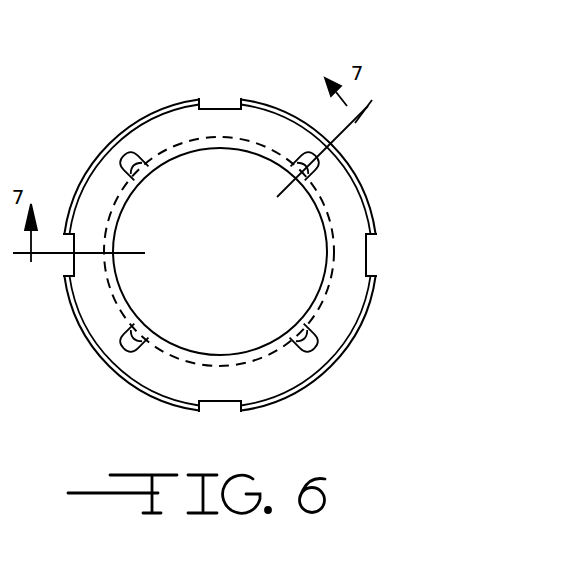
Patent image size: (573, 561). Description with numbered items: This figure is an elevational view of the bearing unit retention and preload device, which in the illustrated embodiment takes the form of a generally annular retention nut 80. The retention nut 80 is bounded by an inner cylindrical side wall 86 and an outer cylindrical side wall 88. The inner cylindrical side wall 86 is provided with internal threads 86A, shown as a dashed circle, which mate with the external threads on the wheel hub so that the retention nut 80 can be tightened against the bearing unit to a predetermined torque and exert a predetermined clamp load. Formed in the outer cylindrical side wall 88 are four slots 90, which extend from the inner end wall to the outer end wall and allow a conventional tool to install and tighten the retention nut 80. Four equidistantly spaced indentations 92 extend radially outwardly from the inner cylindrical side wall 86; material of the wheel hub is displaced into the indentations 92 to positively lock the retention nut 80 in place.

The retention nut 80 is at (387, 131).
The inner cylindrical side wall 86 is at (118, 284).
The internal threads 86A is at (186, 356).
The outer cylindrical side wall 88 is at (340, 366).
The slots 90 is at (202, 99).
The indentations 92 is at (142, 183).